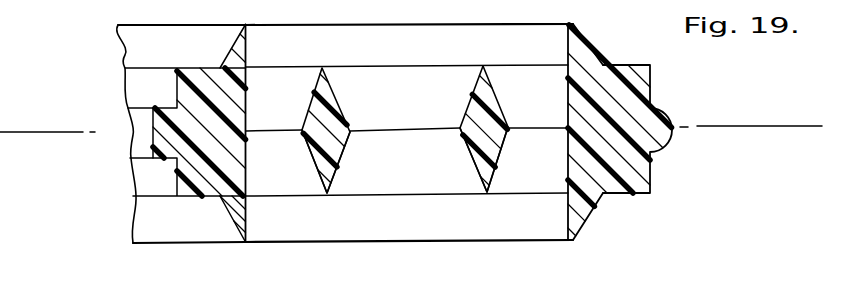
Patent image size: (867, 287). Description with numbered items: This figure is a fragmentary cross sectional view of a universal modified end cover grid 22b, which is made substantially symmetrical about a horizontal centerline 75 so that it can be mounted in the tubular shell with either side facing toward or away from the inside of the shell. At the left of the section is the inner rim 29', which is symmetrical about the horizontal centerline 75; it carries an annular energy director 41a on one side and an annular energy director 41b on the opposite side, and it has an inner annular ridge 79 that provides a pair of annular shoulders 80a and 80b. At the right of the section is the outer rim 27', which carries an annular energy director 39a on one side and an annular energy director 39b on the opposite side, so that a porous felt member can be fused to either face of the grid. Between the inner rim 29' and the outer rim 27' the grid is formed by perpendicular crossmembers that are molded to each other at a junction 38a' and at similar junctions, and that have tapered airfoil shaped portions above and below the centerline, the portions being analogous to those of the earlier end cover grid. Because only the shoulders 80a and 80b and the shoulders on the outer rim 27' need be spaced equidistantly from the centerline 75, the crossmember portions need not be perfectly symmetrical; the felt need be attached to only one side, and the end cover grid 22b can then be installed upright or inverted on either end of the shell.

The annular energy director 41a is at (226, 55).
The annular energy director 41b is at (228, 215).
The annular shoulder 80a is at (166, 108).
The annular shoulder 80b is at (166, 162).
The inner annular ridge 79 is at (157, 125).
The inner rim 29' is at (149, 134).
The junction 38a' is at (407, 113).
The annular energy director 39a is at (580, 35).
The annular energy director 39b is at (587, 226).
The end cover grid 22b is at (650, 176).
The outer rim 27' is at (670, 127).
The horizontal centerline 75 is at (750, 125).